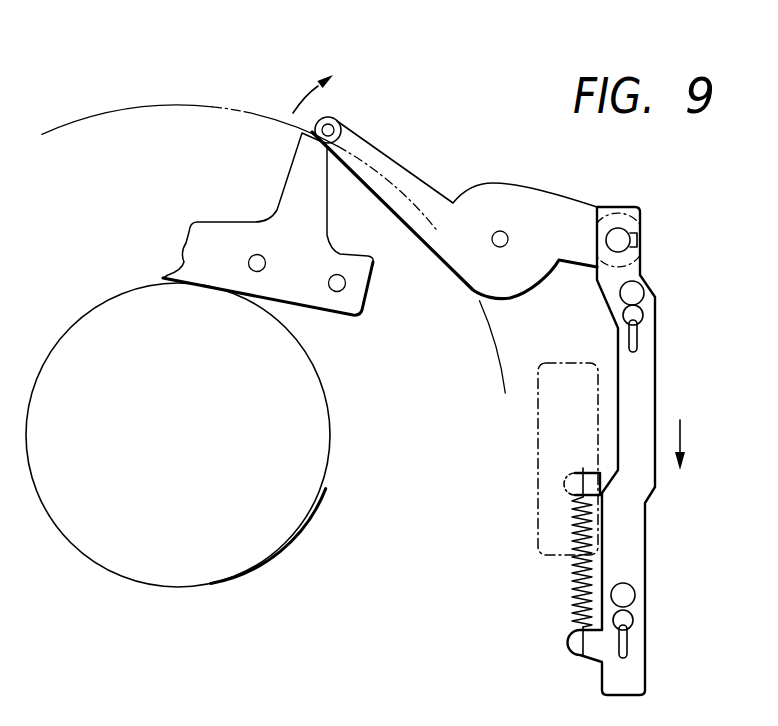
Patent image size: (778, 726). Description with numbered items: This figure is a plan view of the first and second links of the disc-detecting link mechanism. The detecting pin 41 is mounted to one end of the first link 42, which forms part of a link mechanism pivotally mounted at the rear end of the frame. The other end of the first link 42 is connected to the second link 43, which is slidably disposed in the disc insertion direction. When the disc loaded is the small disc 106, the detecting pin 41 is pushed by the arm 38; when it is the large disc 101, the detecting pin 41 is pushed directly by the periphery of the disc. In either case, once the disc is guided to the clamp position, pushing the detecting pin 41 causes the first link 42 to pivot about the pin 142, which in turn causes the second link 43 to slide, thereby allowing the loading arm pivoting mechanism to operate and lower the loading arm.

The large disc 101 is at (218, 101).
The small disc 106 is at (302, 527).
The arm 38 is at (336, 251).
The detecting pin 41 is at (337, 117).
The first link 42 is at (402, 173).
The pin 142 is at (500, 248).
The second link 43 is at (642, 410).